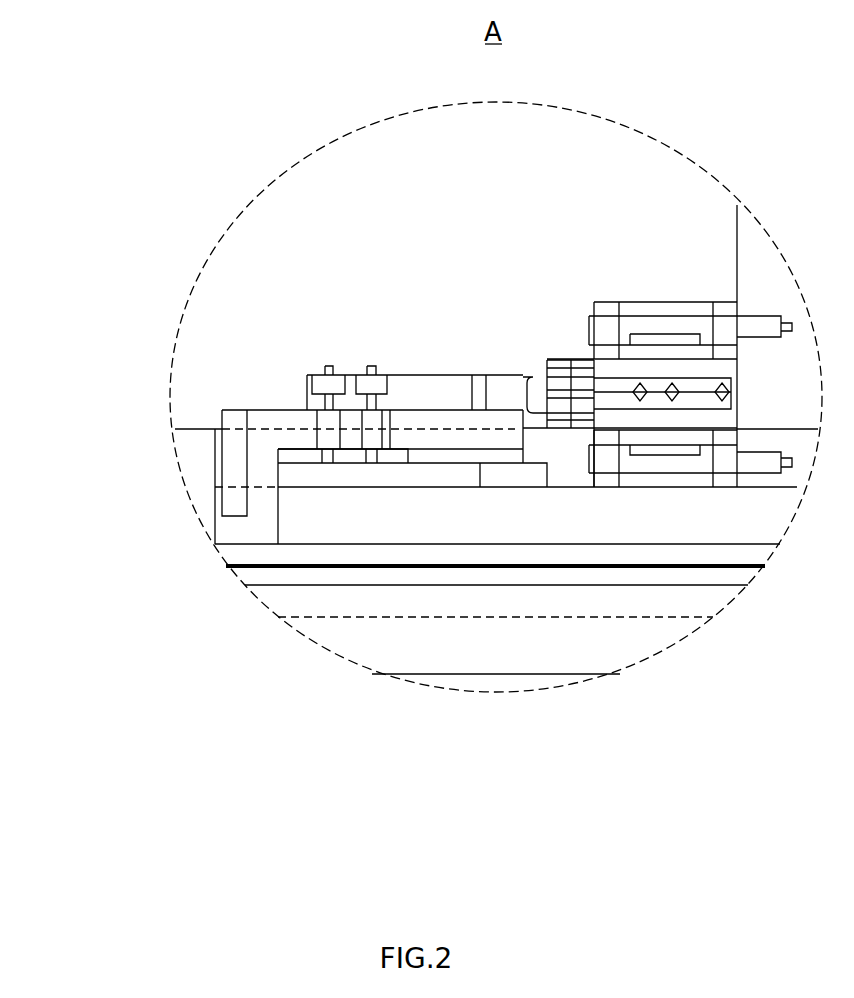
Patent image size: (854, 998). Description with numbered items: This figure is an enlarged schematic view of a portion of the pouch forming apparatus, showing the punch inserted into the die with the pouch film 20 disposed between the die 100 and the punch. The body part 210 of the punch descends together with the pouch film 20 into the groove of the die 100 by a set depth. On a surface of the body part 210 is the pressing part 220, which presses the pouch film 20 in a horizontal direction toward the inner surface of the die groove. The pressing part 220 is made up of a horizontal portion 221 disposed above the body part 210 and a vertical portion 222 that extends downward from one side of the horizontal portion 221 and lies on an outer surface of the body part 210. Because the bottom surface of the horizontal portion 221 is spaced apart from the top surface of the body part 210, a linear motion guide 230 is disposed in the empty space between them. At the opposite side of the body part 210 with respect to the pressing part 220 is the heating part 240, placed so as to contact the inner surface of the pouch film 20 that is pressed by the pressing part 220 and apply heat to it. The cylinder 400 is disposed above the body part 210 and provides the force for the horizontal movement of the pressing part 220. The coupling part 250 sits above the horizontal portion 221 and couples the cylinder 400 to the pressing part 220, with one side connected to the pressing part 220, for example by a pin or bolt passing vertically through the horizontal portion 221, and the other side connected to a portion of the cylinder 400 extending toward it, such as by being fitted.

The pouch film 20 is at (652, 568).
The die 100 is at (443, 652).
The body part 210 is at (338, 516).
The pressing part 220 is at (254, 486).
The horizontal portion 221 is at (282, 439).
The vertical portion 222 is at (267, 470).
The linear motion guide 230 is at (338, 477).
The heating part 240 is at (233, 422).
The coupling part 250 is at (430, 392).
The cylinder 400 is at (566, 360).